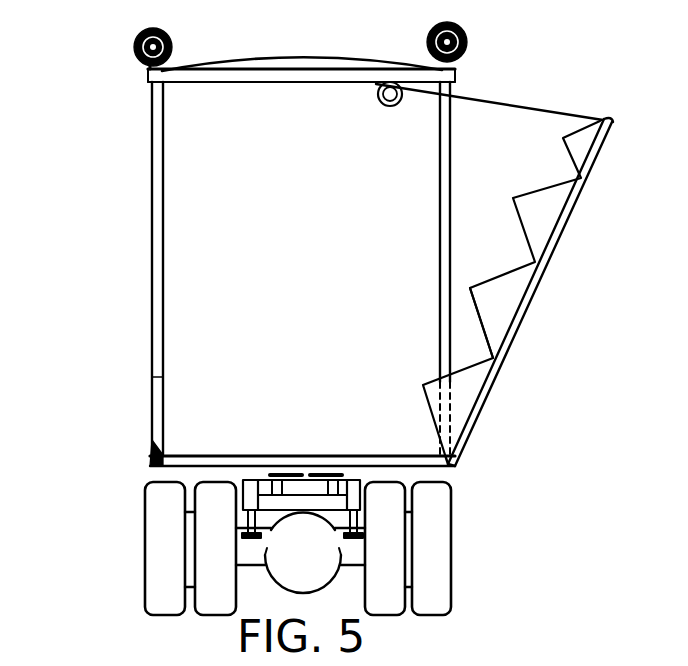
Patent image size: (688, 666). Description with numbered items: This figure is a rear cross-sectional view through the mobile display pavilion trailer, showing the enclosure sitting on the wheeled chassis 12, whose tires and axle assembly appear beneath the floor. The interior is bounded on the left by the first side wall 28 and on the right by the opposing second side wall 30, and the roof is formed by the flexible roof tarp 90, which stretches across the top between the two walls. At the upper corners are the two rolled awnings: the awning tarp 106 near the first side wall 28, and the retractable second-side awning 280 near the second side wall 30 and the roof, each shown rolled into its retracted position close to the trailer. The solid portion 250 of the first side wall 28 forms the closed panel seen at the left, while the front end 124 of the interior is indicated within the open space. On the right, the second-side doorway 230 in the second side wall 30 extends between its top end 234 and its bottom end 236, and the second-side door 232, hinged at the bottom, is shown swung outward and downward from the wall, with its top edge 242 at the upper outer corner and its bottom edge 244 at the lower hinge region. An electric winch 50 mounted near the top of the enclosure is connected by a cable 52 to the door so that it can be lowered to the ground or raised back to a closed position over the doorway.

The wheeled chassis 12 is at (142, 534).
The first side wall 28 is at (146, 142).
The second side wall 30 is at (455, 190).
The electric winch 50 is at (378, 107).
The cable 52 is at (513, 103).
The roof tarp 90 is at (321, 55).
The awning tarp 106 is at (172, 46).
The front end 124 is at (310, 224).
The second-side doorway 230 is at (472, 290).
The second-side door 232 is at (567, 252).
The top end 234 is at (434, 122).
The bottom end 236 is at (433, 442).
The top edge 242 is at (616, 120).
The bottom edge 244 is at (462, 445).
The solid portion 250 is at (151, 263).
The second-side awning 280 is at (468, 28).